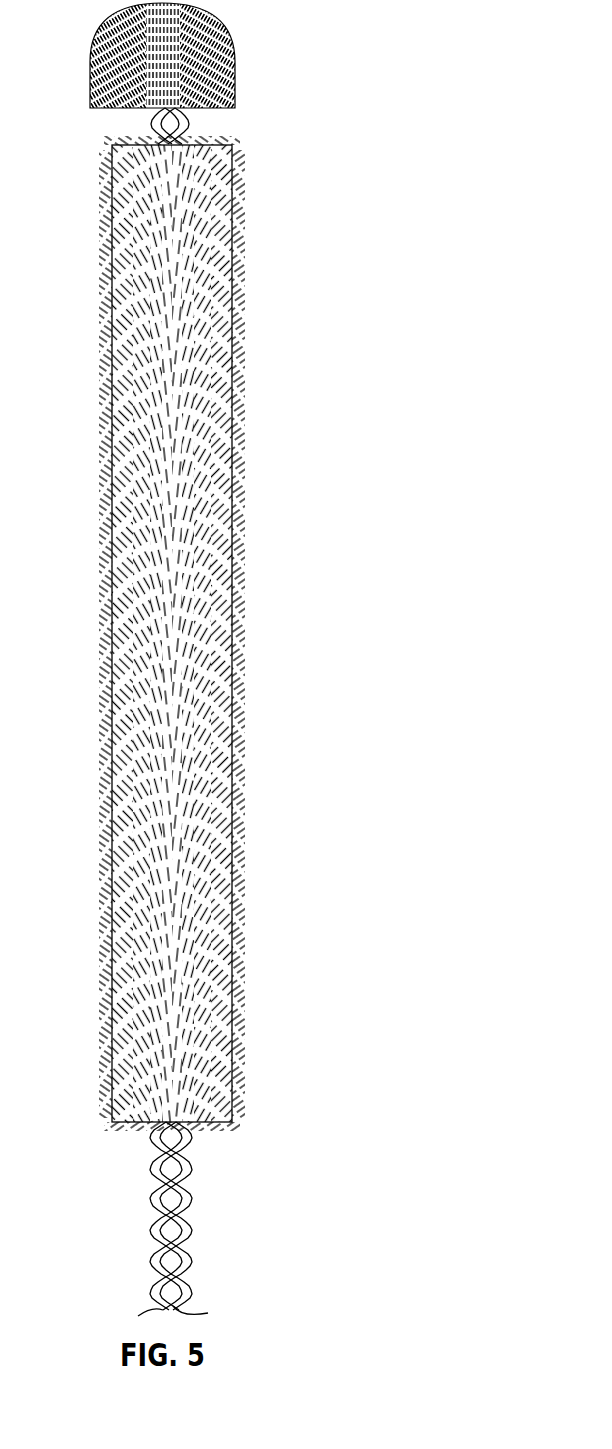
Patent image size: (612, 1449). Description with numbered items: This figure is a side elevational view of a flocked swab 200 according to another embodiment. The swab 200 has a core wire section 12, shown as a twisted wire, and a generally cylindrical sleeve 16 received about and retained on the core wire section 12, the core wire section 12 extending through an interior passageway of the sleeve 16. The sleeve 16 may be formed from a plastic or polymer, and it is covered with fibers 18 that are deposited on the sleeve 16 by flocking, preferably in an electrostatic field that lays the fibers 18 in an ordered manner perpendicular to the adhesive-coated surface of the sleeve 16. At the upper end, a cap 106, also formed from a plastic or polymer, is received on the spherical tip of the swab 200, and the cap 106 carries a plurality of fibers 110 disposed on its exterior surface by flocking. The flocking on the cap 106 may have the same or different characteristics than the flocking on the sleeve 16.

The swab 200 is at (441, 36).
The cap 106 is at (214, 14).
The fibers 110 is at (238, 58).
The core wire section 12 is at (180, 1200).
The fibers 18 is at (105, 228).
The sleeve 16 is at (155, 517).